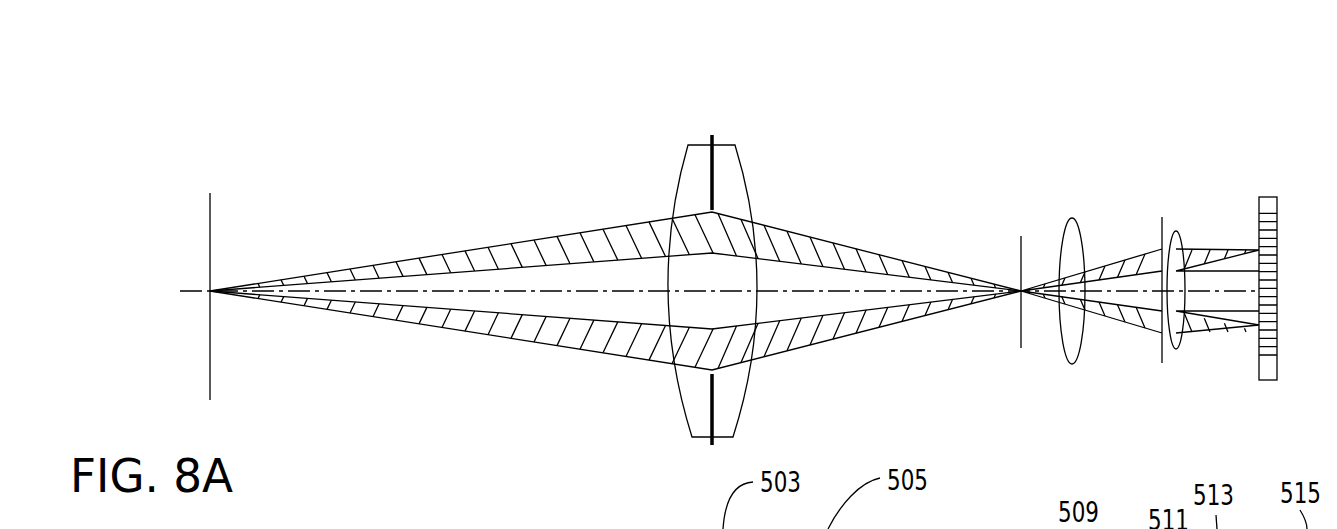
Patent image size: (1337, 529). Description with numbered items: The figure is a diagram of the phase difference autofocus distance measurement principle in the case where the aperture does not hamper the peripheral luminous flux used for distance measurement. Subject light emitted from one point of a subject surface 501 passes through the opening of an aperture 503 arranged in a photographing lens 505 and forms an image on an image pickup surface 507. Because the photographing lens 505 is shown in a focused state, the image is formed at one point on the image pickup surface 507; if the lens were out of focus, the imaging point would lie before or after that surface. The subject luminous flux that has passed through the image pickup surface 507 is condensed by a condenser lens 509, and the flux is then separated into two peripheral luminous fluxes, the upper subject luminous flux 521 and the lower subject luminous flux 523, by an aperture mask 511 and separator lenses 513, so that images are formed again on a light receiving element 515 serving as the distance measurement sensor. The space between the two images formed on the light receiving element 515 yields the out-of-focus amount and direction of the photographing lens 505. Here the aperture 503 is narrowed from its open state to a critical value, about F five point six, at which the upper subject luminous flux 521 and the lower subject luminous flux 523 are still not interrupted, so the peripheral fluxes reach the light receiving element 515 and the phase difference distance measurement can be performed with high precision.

The subject surface 501 is at (210, 216).
The aperture 503 is at (714, 180).
The photographing lens 505 is at (753, 203).
The image pickup surface 507 is at (1021, 237).
The condenser lens 509 is at (1072, 217).
The aperture mask 511 is at (1162, 217).
The separator lenses 513 is at (1176, 230).
The light receiving element 515 is at (1268, 197).
The upper subject luminous flux 521 is at (445, 254).
The lower subject luminous flux 523 is at (444, 330).